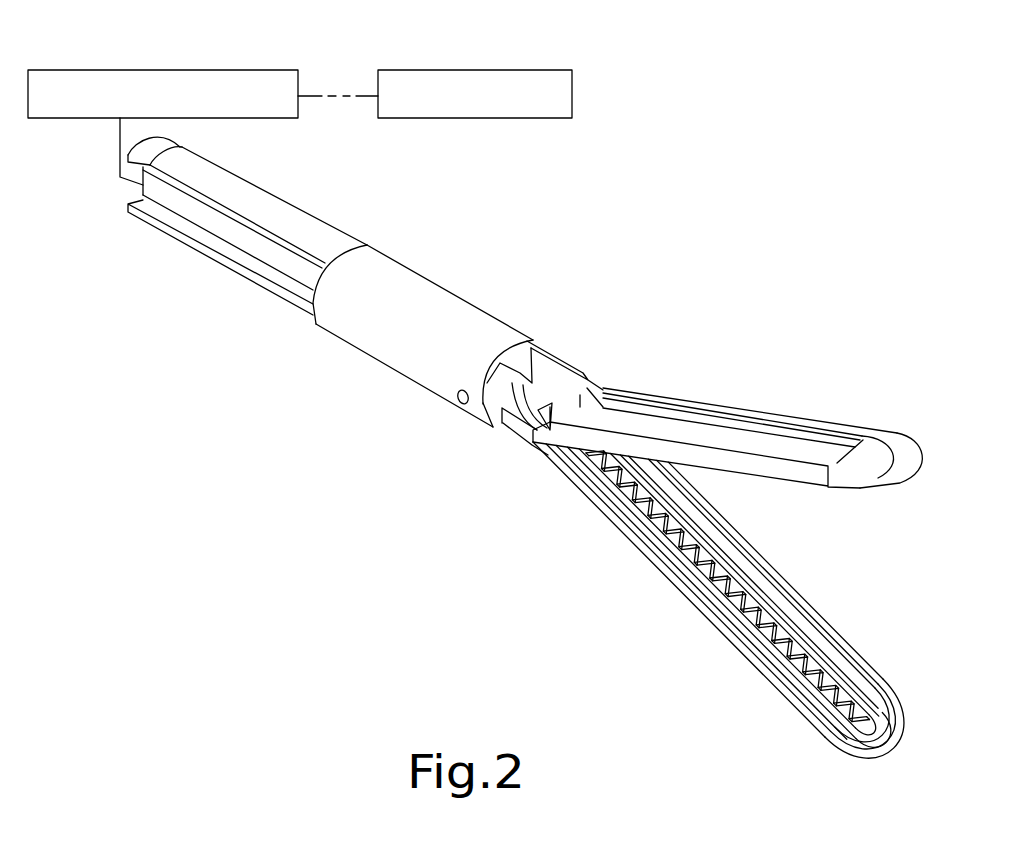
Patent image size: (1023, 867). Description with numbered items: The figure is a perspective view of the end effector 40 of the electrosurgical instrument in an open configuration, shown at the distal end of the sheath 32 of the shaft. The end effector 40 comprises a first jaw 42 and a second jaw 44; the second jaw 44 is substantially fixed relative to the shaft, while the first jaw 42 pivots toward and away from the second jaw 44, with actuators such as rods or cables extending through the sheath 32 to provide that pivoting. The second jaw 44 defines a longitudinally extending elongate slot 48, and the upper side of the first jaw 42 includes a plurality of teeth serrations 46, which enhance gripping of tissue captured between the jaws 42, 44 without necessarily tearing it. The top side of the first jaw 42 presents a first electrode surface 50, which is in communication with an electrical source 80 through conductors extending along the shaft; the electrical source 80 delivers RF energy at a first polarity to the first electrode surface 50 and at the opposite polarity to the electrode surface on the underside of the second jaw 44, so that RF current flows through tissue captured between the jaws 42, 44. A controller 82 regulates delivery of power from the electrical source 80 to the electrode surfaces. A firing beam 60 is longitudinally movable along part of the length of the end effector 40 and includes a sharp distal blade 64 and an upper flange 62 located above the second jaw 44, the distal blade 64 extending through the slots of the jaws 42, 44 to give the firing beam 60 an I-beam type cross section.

The sheath 32 is at (422, 285).
The end effector 40 is at (816, 272).
The first jaw 42 is at (765, 600).
The second jaw 44 is at (743, 411).
The teeth serrations 46 is at (792, 626).
The elongate slot 48 is at (712, 400).
The first electrode surface 50 is at (732, 592).
The firing beam 60 is at (551, 352).
The upper flange 62 is at (577, 382).
The distal blade 64 is at (593, 403).
The electrical source 80 is at (174, 70).
The controller 82 is at (489, 70).